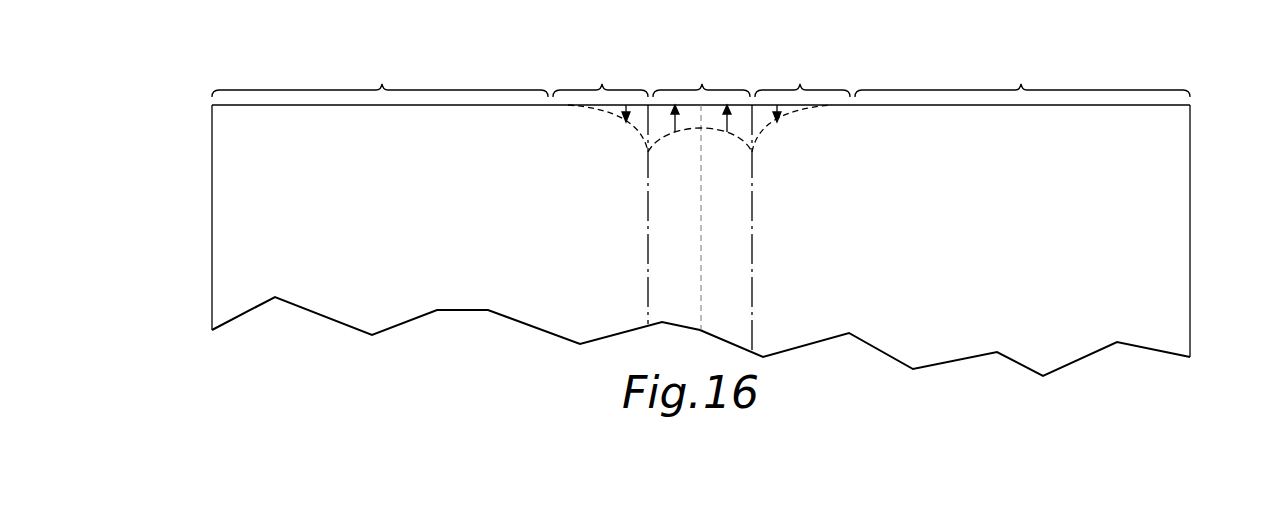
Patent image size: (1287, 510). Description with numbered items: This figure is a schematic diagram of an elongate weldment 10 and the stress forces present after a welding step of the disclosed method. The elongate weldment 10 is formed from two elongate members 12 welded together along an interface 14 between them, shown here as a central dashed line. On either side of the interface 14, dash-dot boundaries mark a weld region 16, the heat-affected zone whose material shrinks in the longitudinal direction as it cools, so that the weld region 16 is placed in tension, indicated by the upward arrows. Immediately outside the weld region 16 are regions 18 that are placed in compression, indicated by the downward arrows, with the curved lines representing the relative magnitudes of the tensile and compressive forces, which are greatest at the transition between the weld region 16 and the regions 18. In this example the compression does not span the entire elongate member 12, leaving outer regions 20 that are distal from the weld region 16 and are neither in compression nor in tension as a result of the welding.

The elongate weldment 10 is at (1147, 59).
The elongate member 12 is at (212, 215).
The interface 14 is at (701, 278).
The weld region 16 is at (702, 86).
The region adjacent to the weld region 18 is at (602, 86).
The region distal from the weld region 20 is at (382, 86).